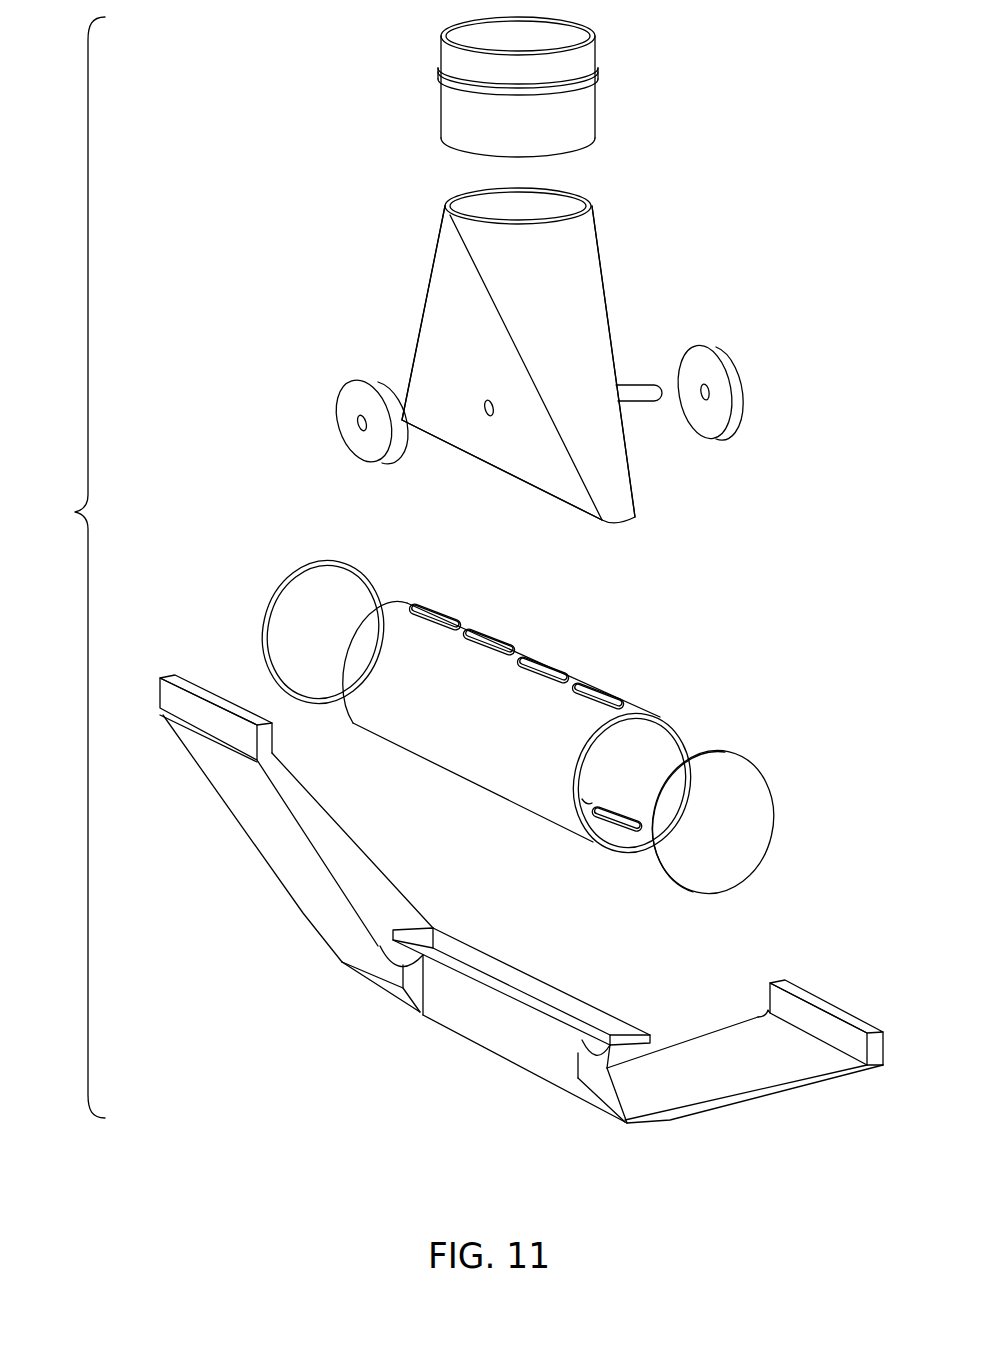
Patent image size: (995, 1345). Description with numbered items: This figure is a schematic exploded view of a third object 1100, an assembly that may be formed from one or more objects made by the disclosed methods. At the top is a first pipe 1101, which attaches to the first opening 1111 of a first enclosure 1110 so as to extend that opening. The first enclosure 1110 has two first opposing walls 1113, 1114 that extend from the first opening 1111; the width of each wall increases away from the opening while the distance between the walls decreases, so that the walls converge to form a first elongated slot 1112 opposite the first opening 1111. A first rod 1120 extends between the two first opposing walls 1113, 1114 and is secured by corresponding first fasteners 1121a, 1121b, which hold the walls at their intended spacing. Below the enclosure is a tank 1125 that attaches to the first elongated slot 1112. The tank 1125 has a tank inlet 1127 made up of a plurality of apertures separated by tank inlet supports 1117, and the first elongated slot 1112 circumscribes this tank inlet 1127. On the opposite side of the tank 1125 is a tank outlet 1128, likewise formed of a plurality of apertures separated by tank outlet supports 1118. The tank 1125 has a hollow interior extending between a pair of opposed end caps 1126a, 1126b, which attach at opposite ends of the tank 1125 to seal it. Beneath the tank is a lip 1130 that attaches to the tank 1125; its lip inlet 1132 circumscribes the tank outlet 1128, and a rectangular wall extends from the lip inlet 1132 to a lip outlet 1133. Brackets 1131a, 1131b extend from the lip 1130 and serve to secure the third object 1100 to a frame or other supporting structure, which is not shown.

The third object 1100 is at (59, 567).
The first pipe 1101 is at (596, 108).
The first enclosure 1110 is at (522, 348).
The first opening 1111 is at (448, 204).
The first elongated slot 1112 is at (528, 486).
The first opposing wall 1113 is at (427, 316).
The first opposing wall 1114 is at (608, 318).
The first rod 1120 is at (643, 401).
The first fastener 1121a is at (347, 407).
The first fastener 1121b is at (719, 378).
The tank 1125 is at (523, 745).
The end cap 1126a is at (308, 592).
The end cap 1126b is at (758, 793).
The tank inlet 1127 is at (491, 647).
The tank inlet support 1117 is at (573, 688).
The tank outlet support 1118 is at (587, 803).
The tank outlet 1128 is at (615, 827).
The lip 1130 is at (521, 913).
The bracket 1131a is at (275, 853).
The bracket 1131b is at (745, 1082).
The lip inlet 1132 is at (518, 980).
The lip outlet 1133 is at (527, 1073).